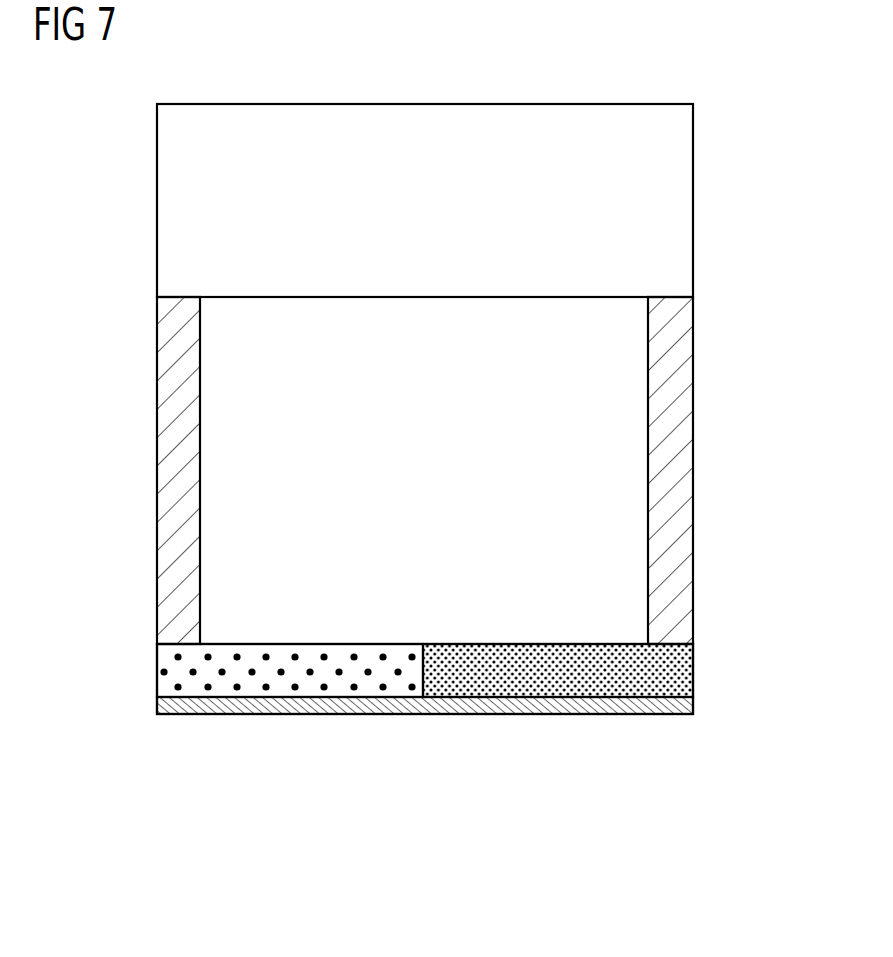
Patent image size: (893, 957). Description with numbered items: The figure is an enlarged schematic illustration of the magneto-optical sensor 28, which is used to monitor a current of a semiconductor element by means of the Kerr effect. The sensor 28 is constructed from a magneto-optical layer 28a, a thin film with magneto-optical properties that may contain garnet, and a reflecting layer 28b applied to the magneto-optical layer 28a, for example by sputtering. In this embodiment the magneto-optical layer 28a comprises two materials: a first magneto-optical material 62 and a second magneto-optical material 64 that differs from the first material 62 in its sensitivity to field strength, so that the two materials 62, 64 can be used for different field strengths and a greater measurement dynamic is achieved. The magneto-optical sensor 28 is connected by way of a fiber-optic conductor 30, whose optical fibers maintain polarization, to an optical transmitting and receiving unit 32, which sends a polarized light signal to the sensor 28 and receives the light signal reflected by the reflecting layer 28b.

The optical transmitting and receiving unit 32 is at (693, 192).
The fiber-optic conductor 30 is at (680, 330).
The magneto-optical sensor 28 is at (146, 669).
The magneto-optical layer 28a is at (394, 652).
The reflecting layer 28b is at (396, 714).
The first magneto-optical material 62 is at (279, 651).
The second magneto-optical material 64 is at (570, 655).